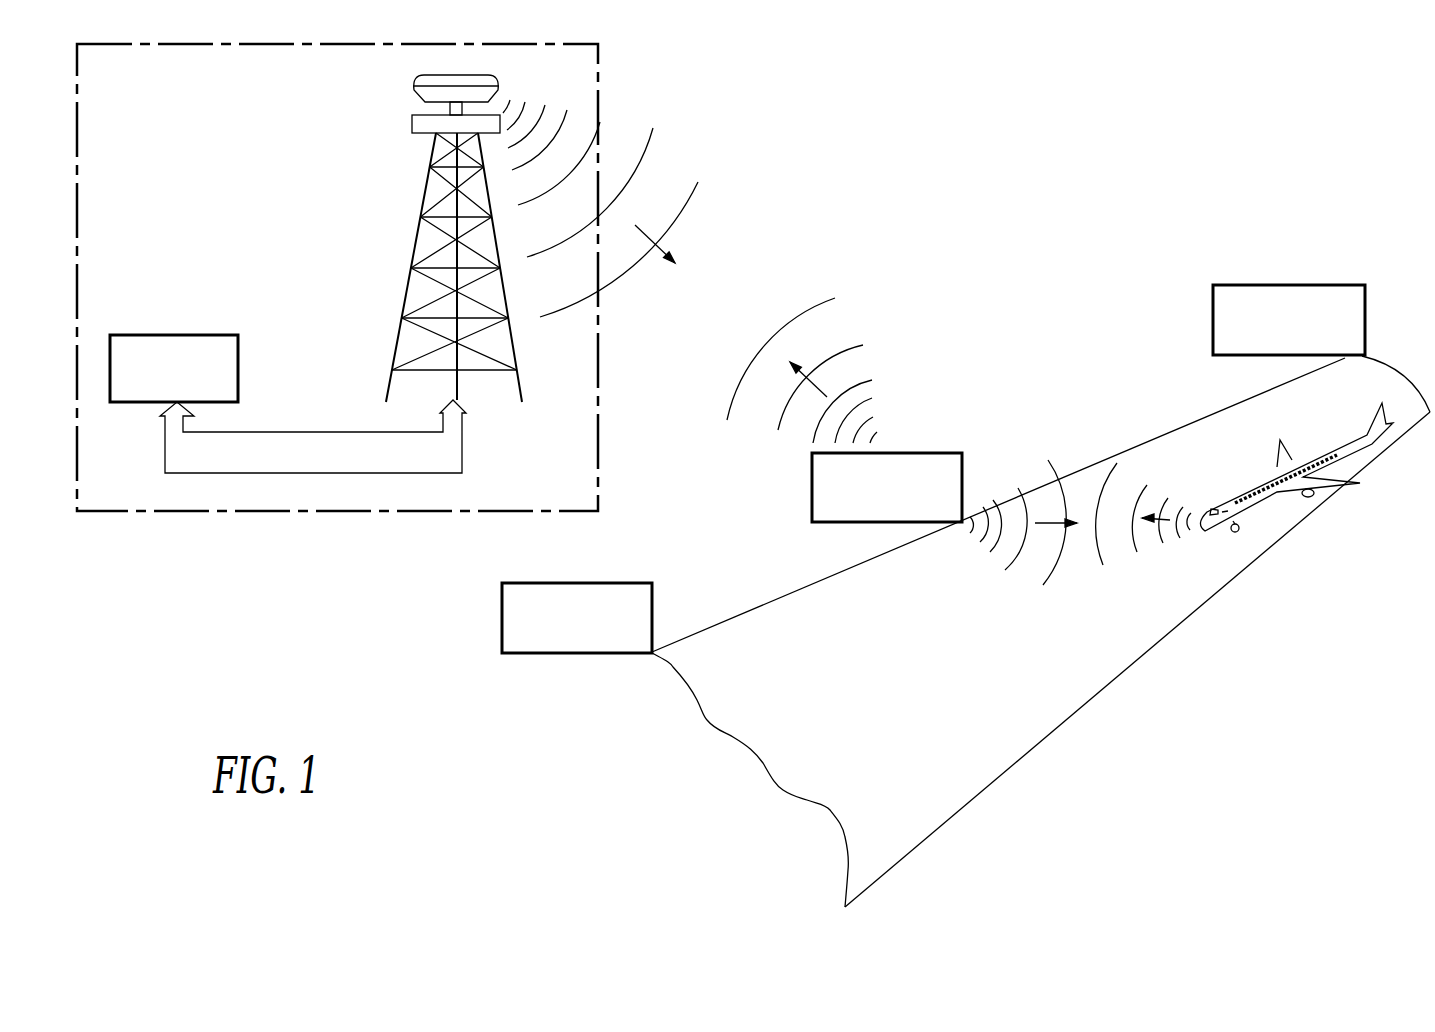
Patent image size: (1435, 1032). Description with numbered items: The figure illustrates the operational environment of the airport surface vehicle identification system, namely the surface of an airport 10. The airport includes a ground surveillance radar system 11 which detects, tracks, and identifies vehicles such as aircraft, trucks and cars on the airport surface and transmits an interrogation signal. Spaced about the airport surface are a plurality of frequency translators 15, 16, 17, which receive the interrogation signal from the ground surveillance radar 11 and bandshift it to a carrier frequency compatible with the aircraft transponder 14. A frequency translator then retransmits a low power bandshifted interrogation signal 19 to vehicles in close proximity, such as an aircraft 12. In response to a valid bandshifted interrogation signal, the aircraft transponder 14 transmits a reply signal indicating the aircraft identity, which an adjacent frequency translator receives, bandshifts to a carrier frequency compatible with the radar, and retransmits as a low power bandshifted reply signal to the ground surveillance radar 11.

The airport 10 is at (1064, 226).
The ground surveillance radar system 11 is at (252, 525).
The aircraft 12 is at (1312, 463).
The aircraft transponder 14 is at (1201, 521).
The frequency translator 15 is at (502, 616).
The frequency translator 16 is at (812, 510).
The frequency translator 17 is at (1213, 288).
The bandshifted interrogation signal 19 is at (1055, 470).